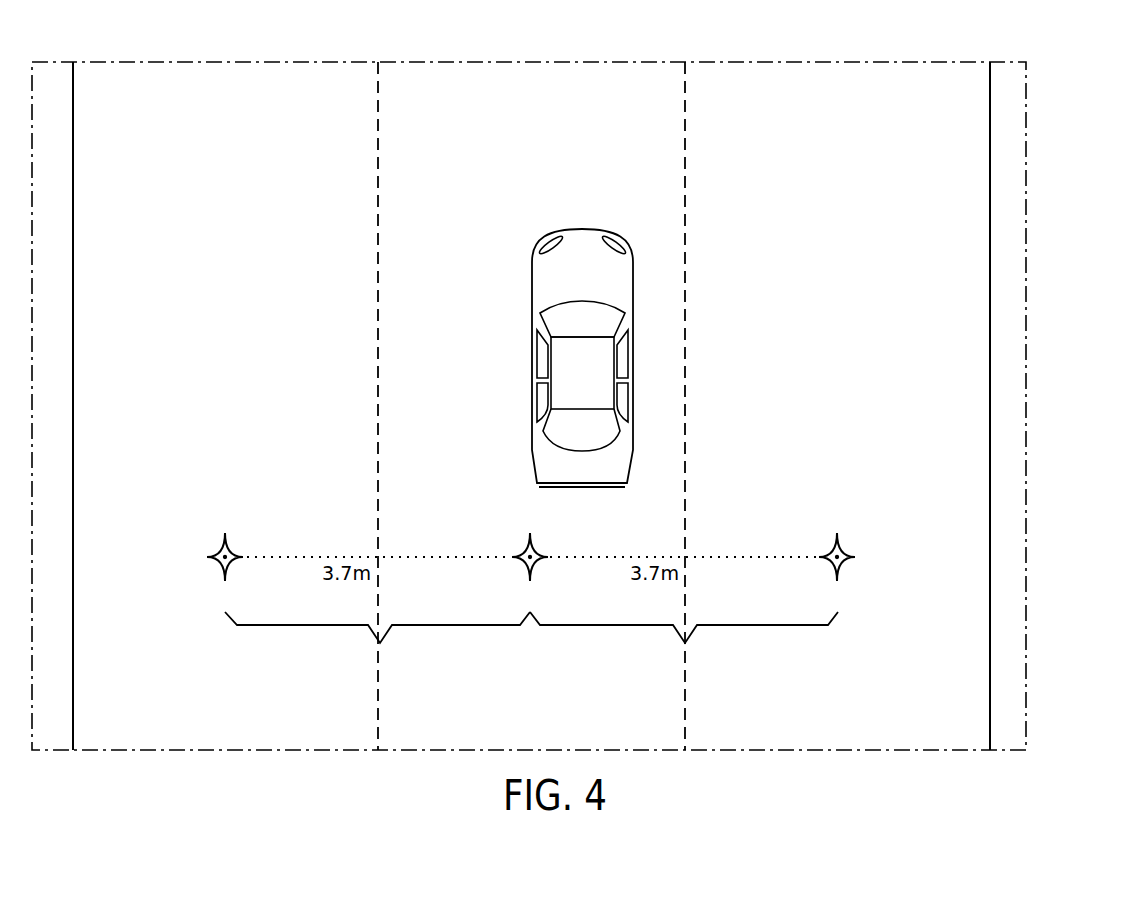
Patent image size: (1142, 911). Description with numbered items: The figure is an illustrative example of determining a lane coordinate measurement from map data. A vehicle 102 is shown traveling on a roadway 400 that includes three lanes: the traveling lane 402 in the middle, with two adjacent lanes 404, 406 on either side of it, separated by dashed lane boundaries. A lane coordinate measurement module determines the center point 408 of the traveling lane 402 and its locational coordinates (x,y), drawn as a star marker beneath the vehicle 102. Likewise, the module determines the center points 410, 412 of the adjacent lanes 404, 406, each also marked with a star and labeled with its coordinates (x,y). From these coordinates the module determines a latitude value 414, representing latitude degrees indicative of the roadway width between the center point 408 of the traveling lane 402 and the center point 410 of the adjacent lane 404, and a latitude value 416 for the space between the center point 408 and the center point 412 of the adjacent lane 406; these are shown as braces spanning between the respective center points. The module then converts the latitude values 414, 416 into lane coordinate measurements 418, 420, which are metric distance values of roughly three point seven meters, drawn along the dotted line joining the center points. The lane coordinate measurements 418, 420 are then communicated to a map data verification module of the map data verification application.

The roadway 400 is at (1017, 53).
The traveling lane 402 is at (533, 128).
The adjacent lane 404 is at (838, 128).
The adjacent lane 406 is at (226, 128).
The vehicle 102 is at (633, 259).
The center point of the traveling lane 408 is at (533, 542).
The center point of the adjacent lane 410 is at (840, 546).
The center point of the adjacent lane 412 is at (228, 542).
The latitude value 414 is at (673, 677).
The latitude value 416 is at (393, 677).
The lane coordinate measurement 418 is at (684, 560).
The lane coordinate measurement 420 is at (373, 560).